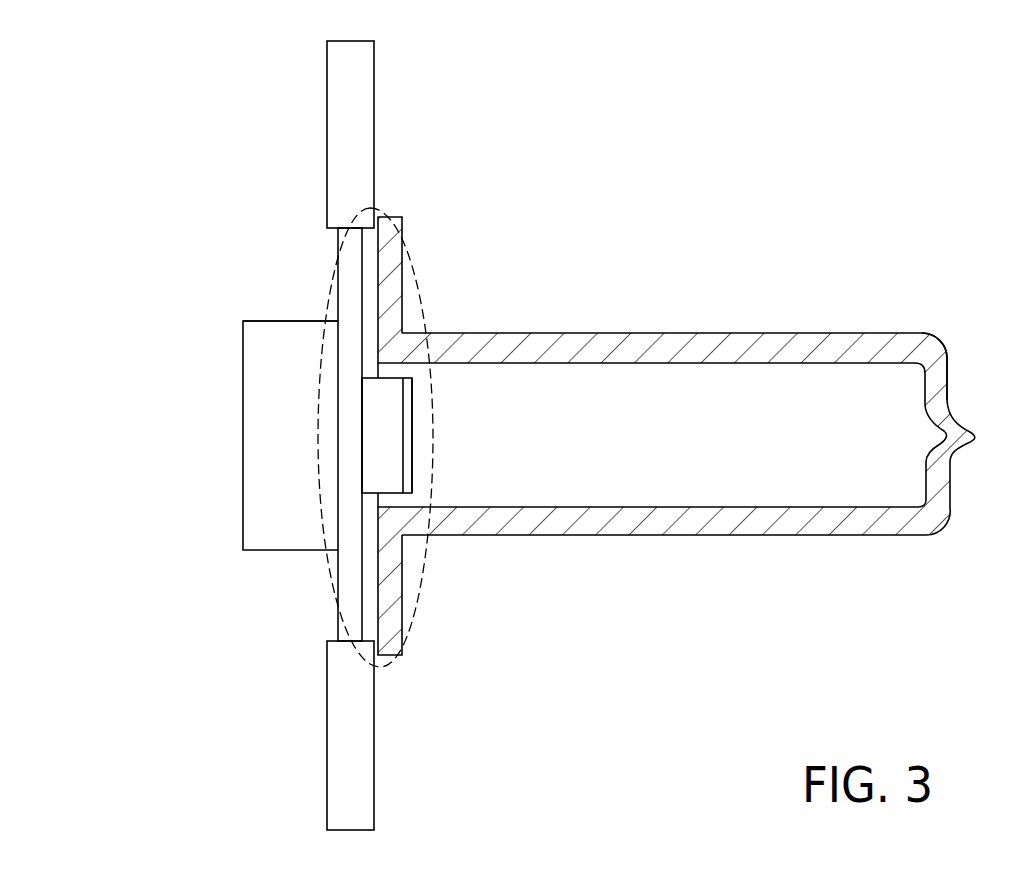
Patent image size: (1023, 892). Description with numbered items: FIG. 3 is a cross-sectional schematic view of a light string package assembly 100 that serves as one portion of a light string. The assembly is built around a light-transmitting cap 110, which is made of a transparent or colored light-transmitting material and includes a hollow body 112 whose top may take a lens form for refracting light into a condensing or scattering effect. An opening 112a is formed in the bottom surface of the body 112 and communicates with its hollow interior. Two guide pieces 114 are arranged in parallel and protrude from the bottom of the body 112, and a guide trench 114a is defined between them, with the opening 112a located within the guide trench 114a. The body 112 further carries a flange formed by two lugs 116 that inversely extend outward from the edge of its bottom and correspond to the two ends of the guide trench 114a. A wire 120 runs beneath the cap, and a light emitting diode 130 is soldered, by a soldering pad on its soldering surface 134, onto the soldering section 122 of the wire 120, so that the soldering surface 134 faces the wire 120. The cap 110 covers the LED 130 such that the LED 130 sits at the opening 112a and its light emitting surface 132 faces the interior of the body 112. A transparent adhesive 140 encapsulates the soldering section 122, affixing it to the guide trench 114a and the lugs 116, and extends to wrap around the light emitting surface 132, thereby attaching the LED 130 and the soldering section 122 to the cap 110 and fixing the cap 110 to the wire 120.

The light string package assembly 100 is at (808, 117).
The light-transmitting cap 110 is at (817, 333).
The body 112 is at (668, 333).
The opening 112a is at (378, 502).
The guide piece 114 is at (243, 373).
The guide trench 114a is at (279, 330).
The lug 116 is at (400, 248).
The wire 120 is at (335, 148).
The soldering section 122 is at (348, 247).
The light emitting diode 130 is at (397, 445).
The light emitting surface 132 is at (413, 415).
The soldering surface 134 is at (362, 415).
The transparent adhesive 140 is at (318, 570).